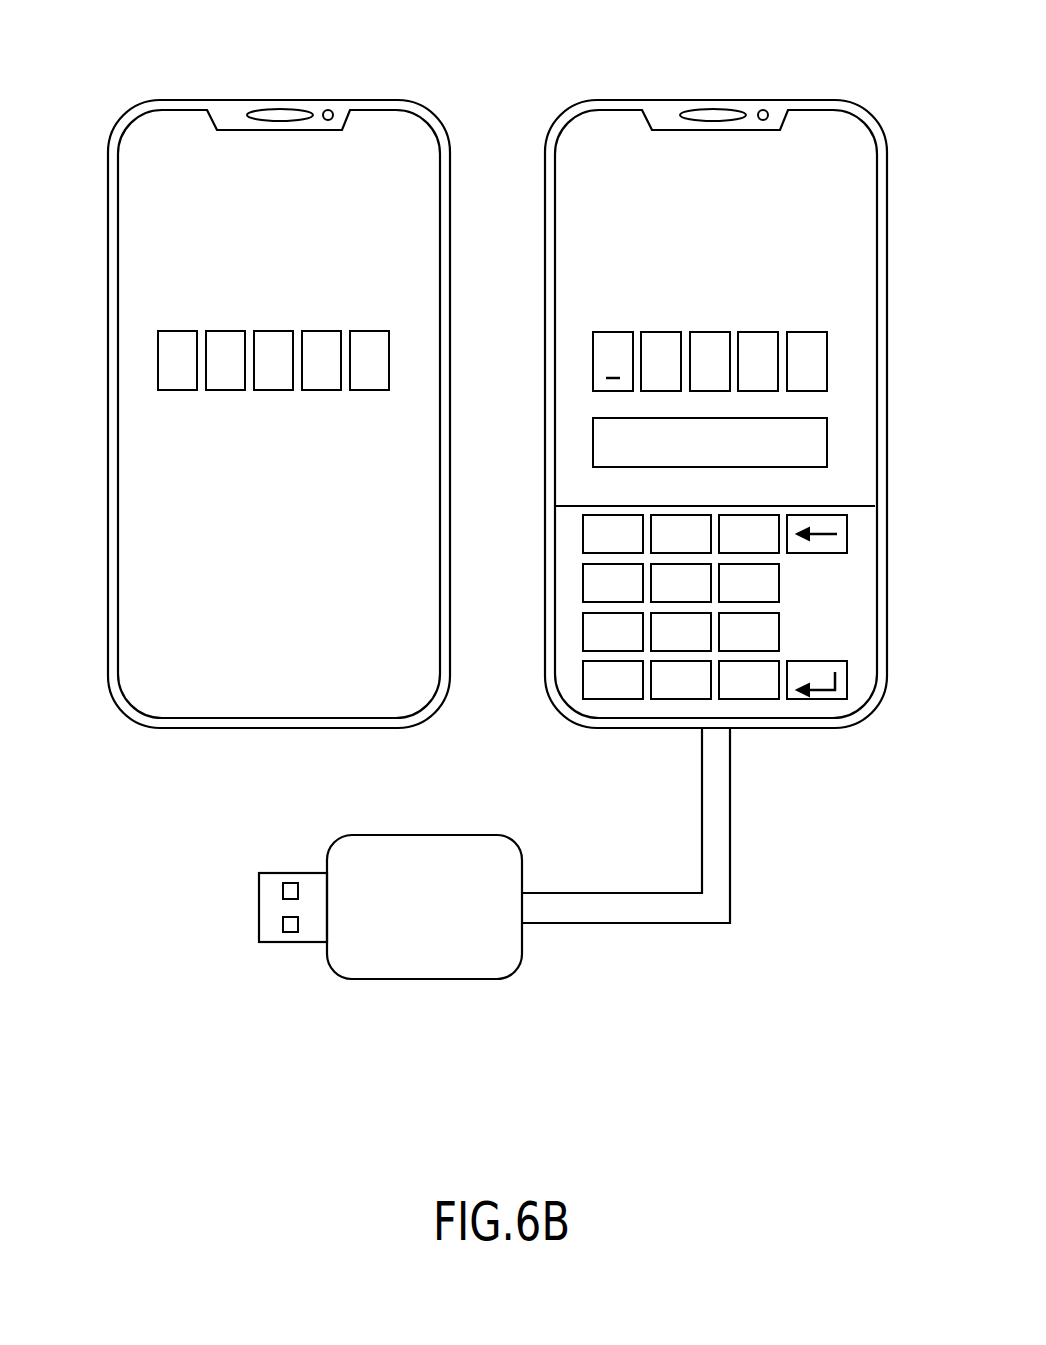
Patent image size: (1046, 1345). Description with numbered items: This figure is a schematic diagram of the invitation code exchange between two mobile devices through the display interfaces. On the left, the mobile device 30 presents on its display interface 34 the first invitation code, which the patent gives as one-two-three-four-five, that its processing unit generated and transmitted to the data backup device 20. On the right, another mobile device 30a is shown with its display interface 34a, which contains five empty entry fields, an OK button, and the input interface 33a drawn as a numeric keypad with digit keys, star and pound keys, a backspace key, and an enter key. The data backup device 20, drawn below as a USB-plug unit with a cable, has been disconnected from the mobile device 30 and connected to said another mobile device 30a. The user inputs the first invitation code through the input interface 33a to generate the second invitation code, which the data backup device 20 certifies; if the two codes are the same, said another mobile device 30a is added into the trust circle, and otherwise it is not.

The mobile device 30 is at (246, 368).
The another mobile device 30a is at (751, 368).
The display interface 34 is at (118, 240).
The display interface 34a is at (875, 238).
The input interface 33a is at (855, 506).
The data backup device 20 is at (382, 979).